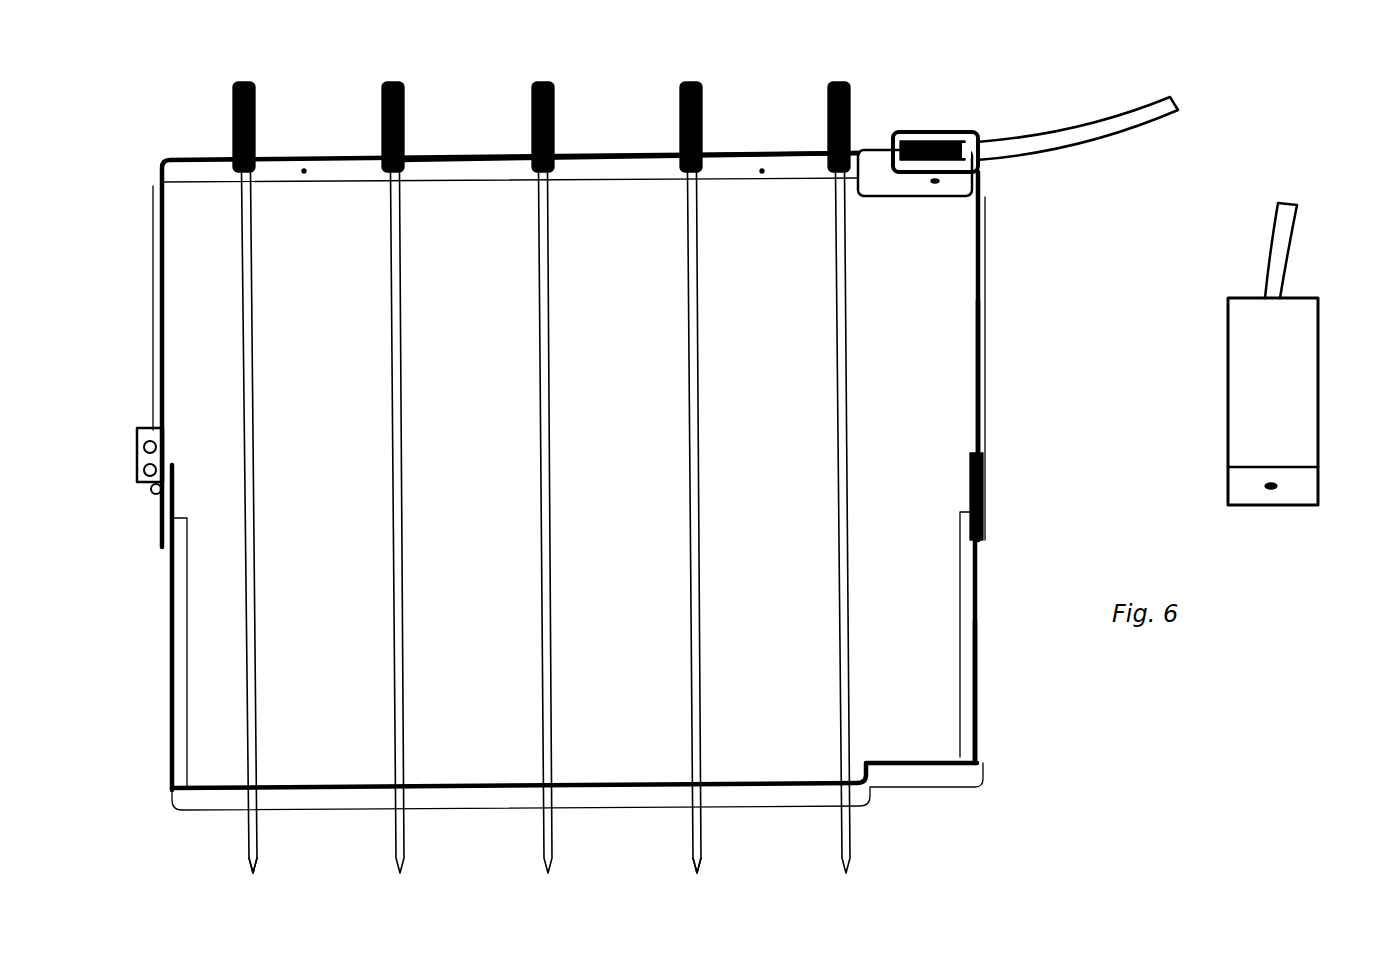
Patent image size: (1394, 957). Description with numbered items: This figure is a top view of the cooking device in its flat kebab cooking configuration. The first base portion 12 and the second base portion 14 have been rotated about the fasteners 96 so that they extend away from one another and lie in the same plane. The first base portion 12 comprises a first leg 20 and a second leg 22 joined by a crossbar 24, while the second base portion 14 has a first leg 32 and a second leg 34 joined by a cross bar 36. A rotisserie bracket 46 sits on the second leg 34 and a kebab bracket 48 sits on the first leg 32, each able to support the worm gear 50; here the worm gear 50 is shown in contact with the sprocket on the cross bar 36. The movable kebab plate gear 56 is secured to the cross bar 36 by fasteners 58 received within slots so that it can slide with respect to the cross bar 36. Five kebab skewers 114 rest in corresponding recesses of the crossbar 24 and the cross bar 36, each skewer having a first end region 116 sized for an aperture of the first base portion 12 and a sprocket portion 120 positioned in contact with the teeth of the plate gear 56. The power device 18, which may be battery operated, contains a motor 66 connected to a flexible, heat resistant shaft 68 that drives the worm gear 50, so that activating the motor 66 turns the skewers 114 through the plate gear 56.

The first base portion 12 is at (982, 610).
The second base portion 14 is at (987, 348).
The power device 18 is at (1305, 372).
The first leg 20 is at (977, 578).
The second leg 22 is at (180, 612).
The crossbar 24 is at (596, 792).
The first leg 32 is at (987, 290).
The second leg 34 is at (163, 292).
The cross bar 36 is at (627, 172).
The rotisserie bracket 46 is at (152, 430).
The kebab bracket 48 is at (905, 130).
The worm gear 50 is at (940, 130).
The kebab plate gear 56 is at (935, 178).
The fasteners 58 is at (304, 171).
The motor 66 is at (1305, 436).
The shaft 68 is at (1074, 122).
The fasteners 96 is at (152, 493).
The kebab skewers 114 is at (252, 302).
The first end region 116 is at (702, 832).
The sprocket portion 120 is at (257, 132).